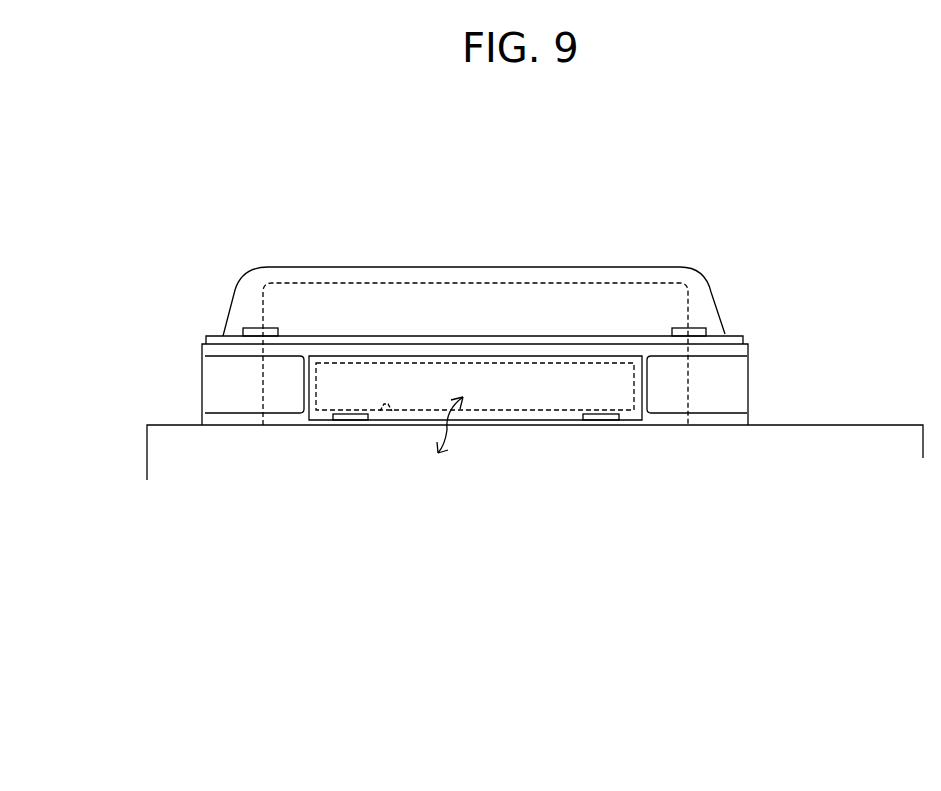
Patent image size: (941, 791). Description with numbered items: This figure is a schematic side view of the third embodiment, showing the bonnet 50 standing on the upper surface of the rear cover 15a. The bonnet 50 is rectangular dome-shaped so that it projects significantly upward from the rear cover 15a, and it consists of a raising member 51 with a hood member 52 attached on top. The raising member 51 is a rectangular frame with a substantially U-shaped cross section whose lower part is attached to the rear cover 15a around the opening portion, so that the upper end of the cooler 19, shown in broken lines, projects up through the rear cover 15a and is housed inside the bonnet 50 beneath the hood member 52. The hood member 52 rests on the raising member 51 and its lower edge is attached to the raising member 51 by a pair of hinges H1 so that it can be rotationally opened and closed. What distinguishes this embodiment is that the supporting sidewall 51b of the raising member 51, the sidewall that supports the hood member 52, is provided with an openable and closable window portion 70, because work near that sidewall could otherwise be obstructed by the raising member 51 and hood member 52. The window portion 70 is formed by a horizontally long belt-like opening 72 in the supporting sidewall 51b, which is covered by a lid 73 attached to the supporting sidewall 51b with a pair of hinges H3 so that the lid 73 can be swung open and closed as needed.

The bonnet 50 is at (485, 213).
The hood member 52 is at (238, 285).
The cooler 19 is at (412, 283).
The hinges H1 is at (273, 328).
The raising member 51 is at (228, 398).
The supporting sidewall 51b is at (720, 390).
The lid 73 is at (313, 419).
The window portion 70 is at (543, 392).
The belt-like opening 72 is at (392, 412).
The hinges H3 is at (348, 421).
The rear cover 15a is at (863, 425).